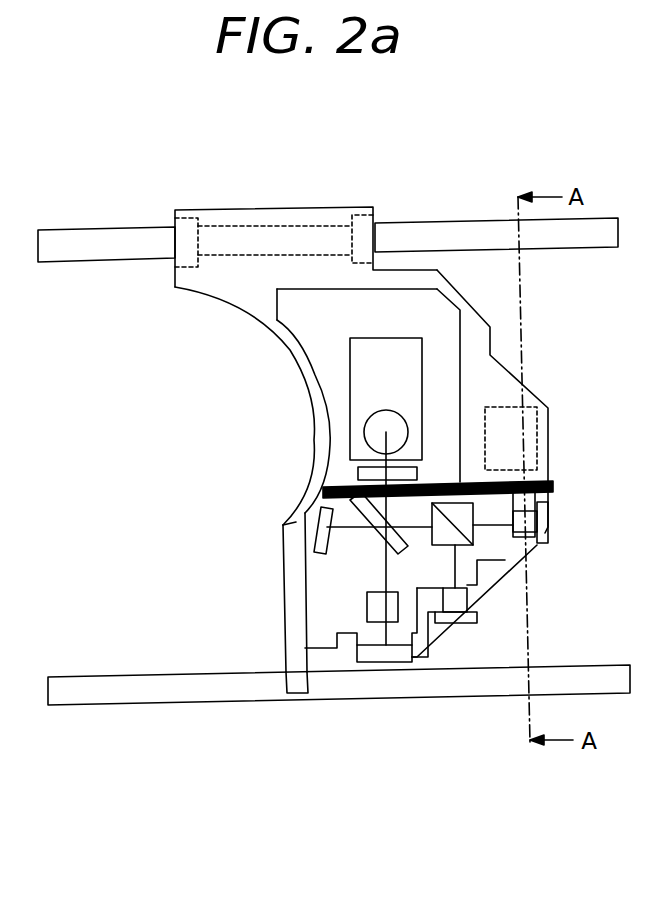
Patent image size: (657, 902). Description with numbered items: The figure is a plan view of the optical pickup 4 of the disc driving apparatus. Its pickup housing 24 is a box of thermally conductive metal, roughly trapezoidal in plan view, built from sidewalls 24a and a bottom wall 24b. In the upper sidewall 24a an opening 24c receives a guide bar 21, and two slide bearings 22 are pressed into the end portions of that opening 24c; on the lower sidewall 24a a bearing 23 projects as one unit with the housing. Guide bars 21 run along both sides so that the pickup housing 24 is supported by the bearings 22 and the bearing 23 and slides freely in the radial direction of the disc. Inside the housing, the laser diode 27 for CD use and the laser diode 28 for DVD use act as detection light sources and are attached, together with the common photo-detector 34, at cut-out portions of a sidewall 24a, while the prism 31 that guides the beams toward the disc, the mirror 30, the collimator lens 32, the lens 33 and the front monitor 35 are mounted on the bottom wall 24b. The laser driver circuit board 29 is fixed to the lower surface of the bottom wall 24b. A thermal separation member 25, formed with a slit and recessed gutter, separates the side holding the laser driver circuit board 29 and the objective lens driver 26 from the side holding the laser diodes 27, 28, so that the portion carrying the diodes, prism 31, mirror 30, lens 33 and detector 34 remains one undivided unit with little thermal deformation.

The optical pickup 4 is at (200, 343).
The guide bar 21 is at (80, 240).
The slide bearing 22 is at (186, 228).
The bearing 23 is at (298, 690).
The pickup housing 24 is at (302, 303).
The sidewall 24a is at (295, 648).
The bottom wall 24b is at (440, 310).
The opening 24c is at (245, 228).
The thermal separation member 25 is at (488, 480).
The objective lens driver 26 is at (397, 350).
The laser diode for CD use 27 is at (533, 522).
The laser diode for DVD use 28 is at (457, 607).
The laser driver circuit board 29 is at (533, 420).
The mirror 30 is at (380, 530).
The prism 31 is at (470, 530).
The collimator lens 32 is at (360, 468).
The lens 33 is at (372, 607).
The photo-detector 34 is at (387, 655).
The front monitor 35 is at (317, 532).